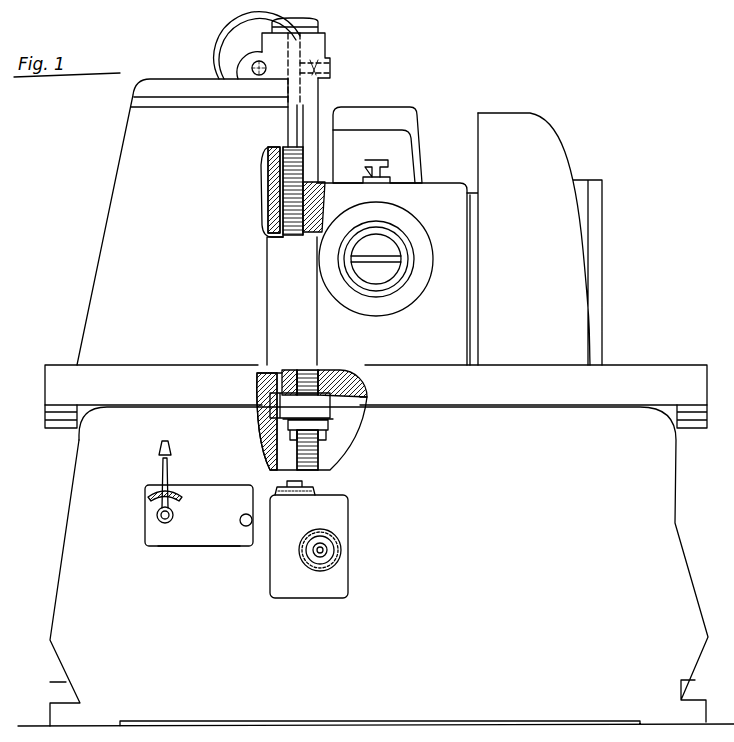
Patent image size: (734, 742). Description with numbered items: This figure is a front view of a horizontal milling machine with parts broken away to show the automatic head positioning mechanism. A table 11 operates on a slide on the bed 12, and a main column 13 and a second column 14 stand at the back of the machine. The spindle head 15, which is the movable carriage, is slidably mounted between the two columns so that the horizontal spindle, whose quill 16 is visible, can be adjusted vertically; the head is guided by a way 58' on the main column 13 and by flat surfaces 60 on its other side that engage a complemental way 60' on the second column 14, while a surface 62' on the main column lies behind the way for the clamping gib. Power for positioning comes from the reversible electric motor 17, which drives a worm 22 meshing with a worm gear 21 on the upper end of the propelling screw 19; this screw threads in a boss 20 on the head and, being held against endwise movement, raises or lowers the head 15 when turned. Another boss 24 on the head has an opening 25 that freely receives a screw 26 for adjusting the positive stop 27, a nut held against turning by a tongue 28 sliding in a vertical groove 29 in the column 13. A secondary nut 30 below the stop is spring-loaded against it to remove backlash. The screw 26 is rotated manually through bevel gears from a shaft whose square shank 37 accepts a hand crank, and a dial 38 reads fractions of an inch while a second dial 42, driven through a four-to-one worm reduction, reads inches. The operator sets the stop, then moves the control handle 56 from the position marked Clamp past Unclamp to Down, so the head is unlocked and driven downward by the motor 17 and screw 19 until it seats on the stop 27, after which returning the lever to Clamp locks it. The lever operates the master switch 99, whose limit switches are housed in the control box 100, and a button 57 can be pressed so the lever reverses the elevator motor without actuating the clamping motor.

The table 11 is at (644, 363).
The bed 12 is at (660, 456).
The main column 13 is at (98, 284).
The second column 14 is at (576, 271).
The spindle head 15 is at (437, 188).
The quill 16 is at (396, 246).
The electric motor (elevator motor) 17 is at (232, 46).
The propelling screw 19 is at (305, 162).
The boss 20 is at (272, 214).
The worm gear 21 is at (332, 68).
The worm 22 is at (258, 76).
The boss 24 is at (286, 368).
The opening 25 is at (332, 378).
The screw 26 is at (312, 456).
The positive stop 27 is at (330, 400).
The tongue 28 is at (262, 398).
The vertical groove 29 is at (270, 463).
The secondary nut 30 is at (330, 427).
The square shank 37 is at (332, 549).
The dial 38 is at (320, 571).
The dial 42 is at (312, 493).
The control handle (control lever) 56 is at (150, 489).
The button 57 is at (246, 528).
The way 58' is at (371, 145).
The flat surfaces 60 is at (455, 239).
The way 60' is at (497, 280).
The surface 62' is at (278, 107).
The master switch 99 is at (212, 543).
The control box 100 is at (152, 548).